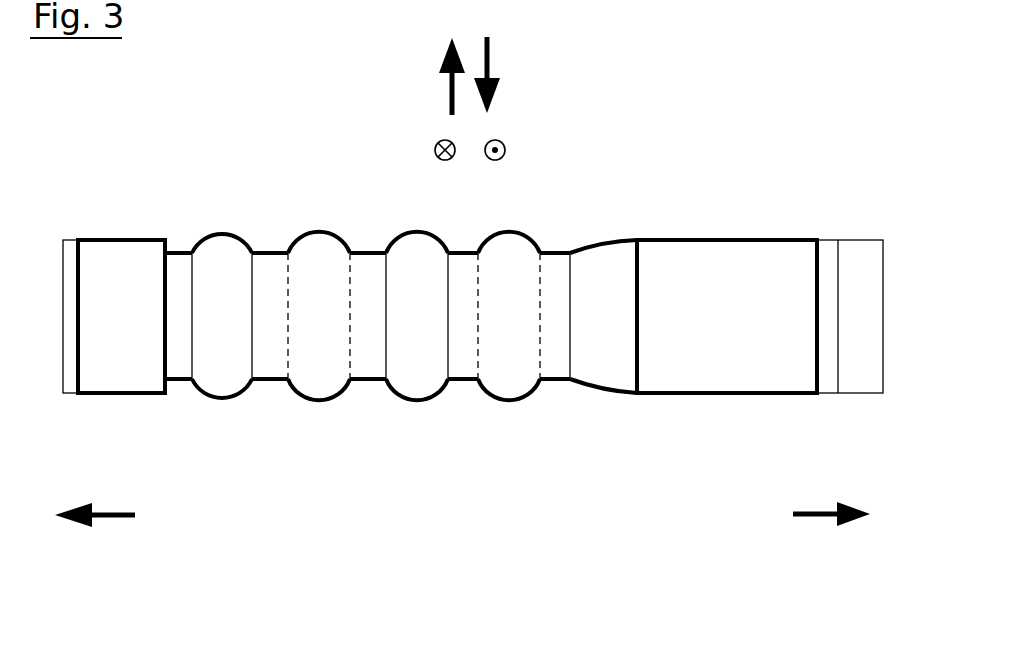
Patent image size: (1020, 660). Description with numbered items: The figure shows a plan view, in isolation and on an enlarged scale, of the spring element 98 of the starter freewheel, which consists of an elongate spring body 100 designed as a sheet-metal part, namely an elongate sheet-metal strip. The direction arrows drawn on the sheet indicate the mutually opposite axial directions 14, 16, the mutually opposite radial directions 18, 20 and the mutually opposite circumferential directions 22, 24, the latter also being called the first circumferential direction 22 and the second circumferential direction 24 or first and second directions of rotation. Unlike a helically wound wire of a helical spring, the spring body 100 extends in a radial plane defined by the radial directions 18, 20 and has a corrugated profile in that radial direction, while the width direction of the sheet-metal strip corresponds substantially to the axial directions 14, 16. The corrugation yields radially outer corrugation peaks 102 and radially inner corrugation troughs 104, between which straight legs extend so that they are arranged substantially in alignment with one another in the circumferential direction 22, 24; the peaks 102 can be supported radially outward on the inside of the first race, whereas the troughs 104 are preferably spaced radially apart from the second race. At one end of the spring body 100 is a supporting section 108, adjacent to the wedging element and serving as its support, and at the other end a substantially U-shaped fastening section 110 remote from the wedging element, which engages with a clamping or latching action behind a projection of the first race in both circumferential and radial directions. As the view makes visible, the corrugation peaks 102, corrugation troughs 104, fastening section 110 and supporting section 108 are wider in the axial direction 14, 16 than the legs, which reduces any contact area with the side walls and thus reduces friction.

The axial direction 14 is at (490, 53).
The axial direction 16 is at (448, 98).
The radial direction 18 is at (502, 140).
The radial direction 20 is at (433, 148).
The first circumferential direction 22 is at (819, 515).
The second circumferential direction 24 is at (100, 517).
The spring element 98 is at (453, 332).
The elongate spring body 100 is at (453, 332).
The radially outer corrugation peaks 102 is at (221, 262).
The radially inner corrugation troughs 104 is at (178, 348).
The supporting section 108 is at (108, 280).
The fastening section 110 is at (730, 282).